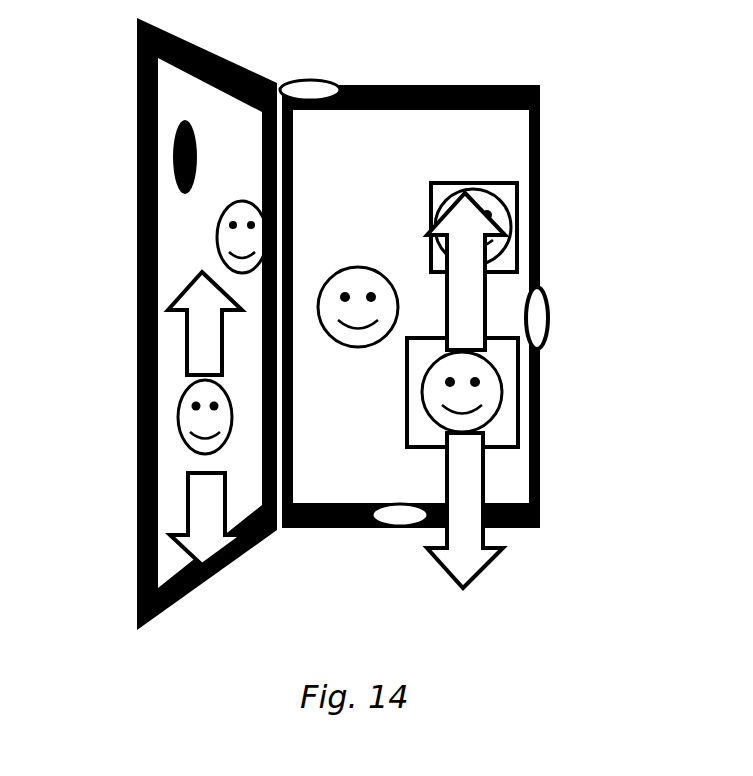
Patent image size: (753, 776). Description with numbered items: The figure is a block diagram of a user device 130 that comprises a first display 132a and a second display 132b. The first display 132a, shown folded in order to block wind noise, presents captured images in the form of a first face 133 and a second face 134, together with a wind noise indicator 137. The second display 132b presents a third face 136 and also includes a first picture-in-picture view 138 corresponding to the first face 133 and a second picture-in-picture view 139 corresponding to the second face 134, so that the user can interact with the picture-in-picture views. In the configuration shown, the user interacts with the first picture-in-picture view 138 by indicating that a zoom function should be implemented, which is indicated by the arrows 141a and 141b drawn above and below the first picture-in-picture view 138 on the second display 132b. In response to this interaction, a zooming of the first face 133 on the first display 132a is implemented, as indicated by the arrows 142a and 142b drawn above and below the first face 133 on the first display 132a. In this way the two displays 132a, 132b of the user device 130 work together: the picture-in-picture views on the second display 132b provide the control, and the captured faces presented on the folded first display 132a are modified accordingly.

The user device 130 is at (344, 337).
The first display 132a is at (165, 557).
The second display 132b is at (513, 468).
The first face 133 is at (230, 420).
The second face 134 is at (245, 203).
The third face 136 is at (368, 343).
The wind noise indicator 137 is at (203, 110).
The first picture-in-picture view 138 is at (403, 417).
The second picture-in-picture view 139 is at (432, 197).
The arrow 141a is at (482, 295).
The arrow 141b is at (475, 468).
The arrow 142a is at (190, 313).
The arrow 142b is at (188, 487).